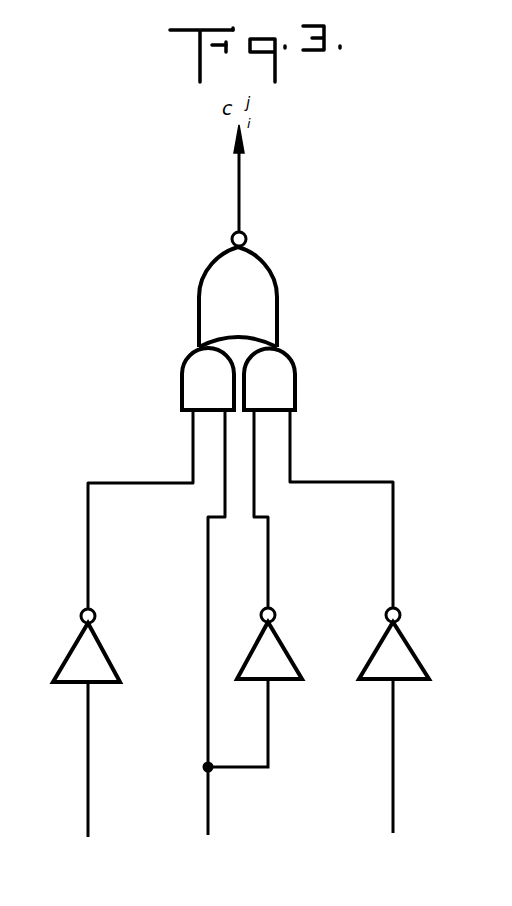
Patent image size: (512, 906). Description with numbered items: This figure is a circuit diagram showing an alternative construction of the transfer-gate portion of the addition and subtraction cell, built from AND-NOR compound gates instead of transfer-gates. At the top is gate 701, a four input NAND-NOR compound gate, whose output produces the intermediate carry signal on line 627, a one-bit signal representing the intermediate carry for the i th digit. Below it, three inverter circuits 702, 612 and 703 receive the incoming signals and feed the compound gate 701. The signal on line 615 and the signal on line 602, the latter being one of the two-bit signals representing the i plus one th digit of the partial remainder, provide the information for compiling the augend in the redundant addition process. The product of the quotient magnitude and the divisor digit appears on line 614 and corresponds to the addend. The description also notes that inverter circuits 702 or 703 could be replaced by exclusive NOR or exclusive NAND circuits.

The line 627 is at (243, 192).
The four input NAND-NOR compound gate 701 is at (276, 291).
The inverter circuit 702 is at (102, 641).
The inverter circuit 612 is at (292, 653).
The inverter circuit 703 is at (420, 658).
The line 615 is at (86, 770).
The line 602 is at (210, 802).
The line 614 is at (396, 791).